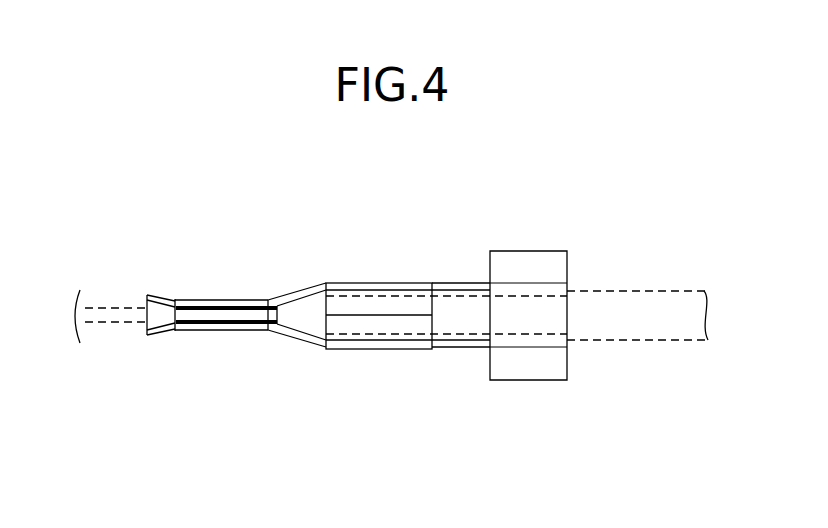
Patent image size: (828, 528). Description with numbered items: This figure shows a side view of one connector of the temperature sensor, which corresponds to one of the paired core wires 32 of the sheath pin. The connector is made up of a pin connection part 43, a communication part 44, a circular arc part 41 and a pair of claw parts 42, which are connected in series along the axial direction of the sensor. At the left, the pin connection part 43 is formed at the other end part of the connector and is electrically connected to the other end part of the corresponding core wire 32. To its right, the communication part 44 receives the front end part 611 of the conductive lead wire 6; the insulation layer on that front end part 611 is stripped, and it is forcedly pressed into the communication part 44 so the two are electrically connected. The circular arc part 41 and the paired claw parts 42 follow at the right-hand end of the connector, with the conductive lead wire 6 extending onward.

The core wire 32 is at (112, 308).
The pin connection part 43 is at (218, 329).
The communication part 44 is at (378, 327).
The front end part of the conductive lead wire 611 is at (392, 305).
The circular arc part 41 is at (510, 310).
The claw parts 42 is at (530, 365).
The conductive lead wire 6 is at (640, 313).